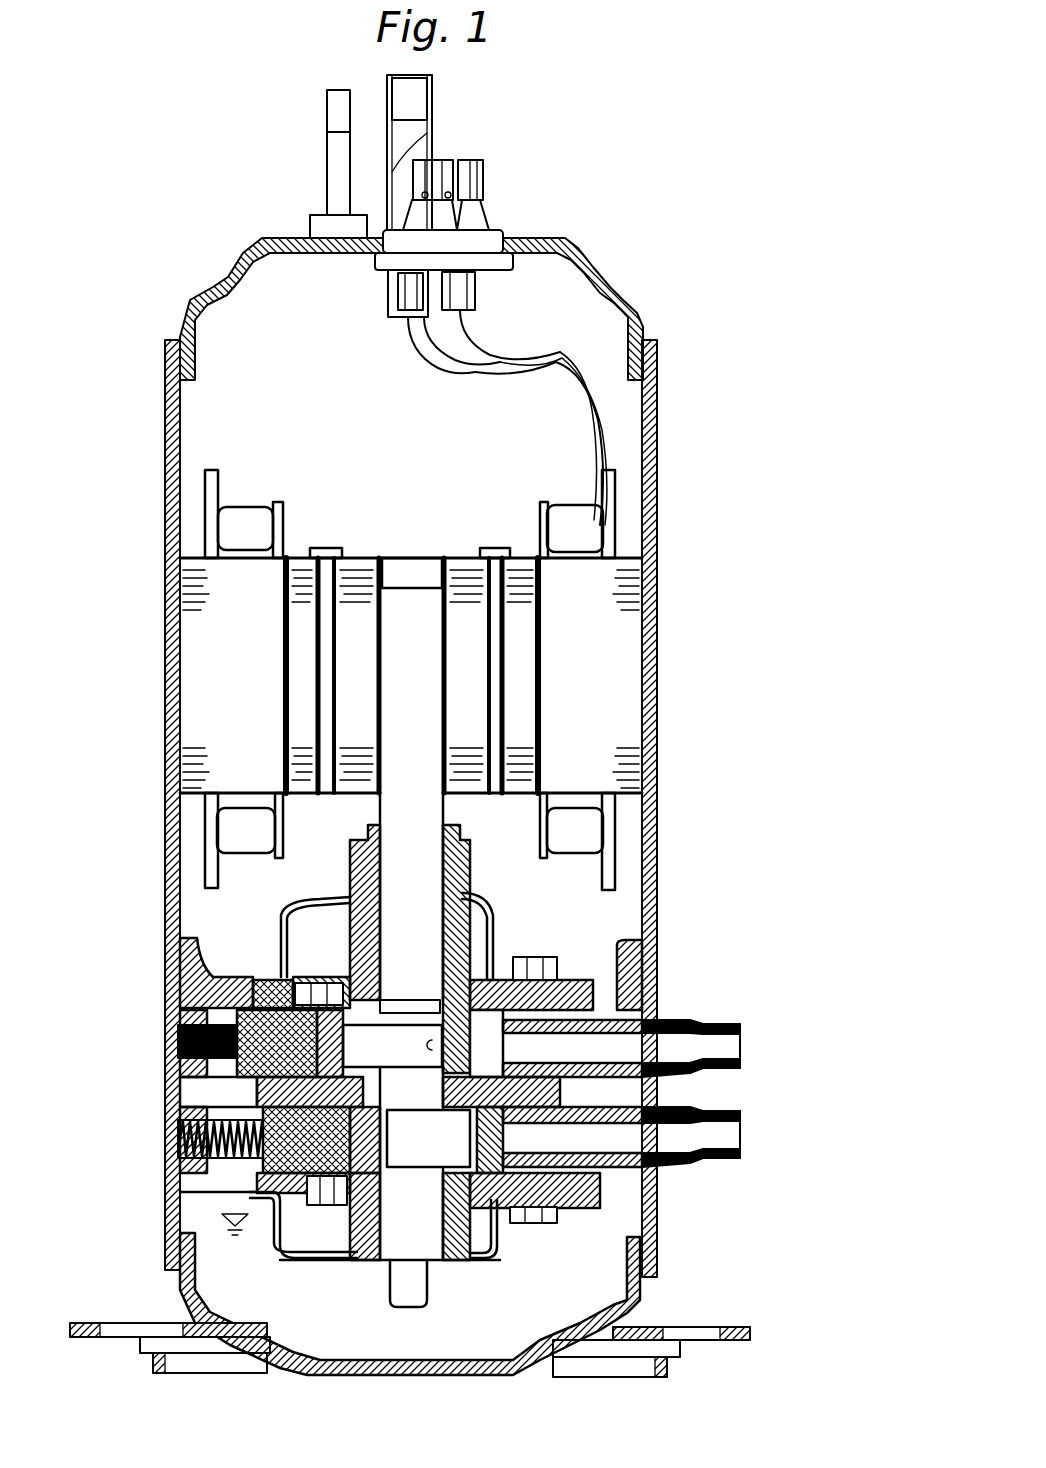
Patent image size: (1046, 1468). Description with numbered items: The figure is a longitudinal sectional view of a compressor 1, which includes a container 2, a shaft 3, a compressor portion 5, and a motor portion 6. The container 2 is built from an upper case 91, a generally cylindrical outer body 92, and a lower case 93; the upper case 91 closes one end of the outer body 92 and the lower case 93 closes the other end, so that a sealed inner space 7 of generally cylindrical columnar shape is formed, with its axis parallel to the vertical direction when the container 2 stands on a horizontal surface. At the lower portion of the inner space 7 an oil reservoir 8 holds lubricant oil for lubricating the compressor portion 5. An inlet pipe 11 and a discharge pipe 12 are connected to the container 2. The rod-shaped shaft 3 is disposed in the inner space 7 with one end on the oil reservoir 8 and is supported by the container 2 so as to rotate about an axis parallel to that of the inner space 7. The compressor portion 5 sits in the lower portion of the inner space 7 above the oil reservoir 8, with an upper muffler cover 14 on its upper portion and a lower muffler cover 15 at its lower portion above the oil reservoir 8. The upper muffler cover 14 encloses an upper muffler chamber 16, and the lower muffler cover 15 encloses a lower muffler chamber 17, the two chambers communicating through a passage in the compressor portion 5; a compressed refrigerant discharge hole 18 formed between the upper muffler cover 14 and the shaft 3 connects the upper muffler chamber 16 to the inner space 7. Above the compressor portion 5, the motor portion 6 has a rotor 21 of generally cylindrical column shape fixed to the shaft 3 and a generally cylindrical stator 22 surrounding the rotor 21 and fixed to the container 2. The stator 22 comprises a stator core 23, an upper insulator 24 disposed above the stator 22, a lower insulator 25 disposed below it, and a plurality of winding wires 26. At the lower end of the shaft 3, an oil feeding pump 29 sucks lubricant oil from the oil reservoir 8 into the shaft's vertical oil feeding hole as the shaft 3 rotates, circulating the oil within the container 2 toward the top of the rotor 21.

The compressor 1 is at (694, 137).
The container 2 is at (220, 265).
The shaft 3 is at (377, 810).
The compressor portion 5 is at (232, 1196).
The motor portion 6 is at (241, 468).
The inner space 7 is at (288, 277).
The oil reservoir 8 is at (213, 1290).
The inlet pipe 11 is at (717, 1010).
The discharge pipe 12 is at (436, 95).
The upper muffler cover 14 is at (495, 898).
The lower muffler cover 15 is at (483, 1300).
The upper muffler chamber 16 is at (497, 918).
The lower muffler chamber 17 is at (480, 1231).
The compressed refrigerant discharge hole 18 is at (465, 895).
The rotor 21 is at (472, 557).
The stator 22 is at (541, 492).
The stator core 23 is at (212, 678).
The upper insulator 24 is at (210, 548).
The lower insulator 25 is at (215, 841).
The winding wires 26 is at (240, 521).
The oil feeding pump 29 is at (405, 1280).
The upper case 91 is at (598, 262).
The outer body 92 is at (657, 432).
The lower case 93 is at (650, 1320).